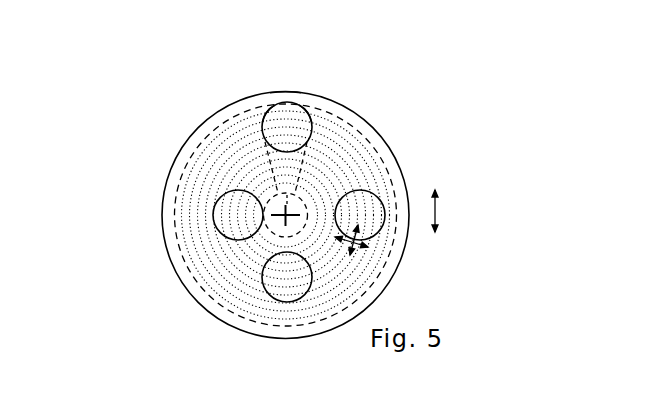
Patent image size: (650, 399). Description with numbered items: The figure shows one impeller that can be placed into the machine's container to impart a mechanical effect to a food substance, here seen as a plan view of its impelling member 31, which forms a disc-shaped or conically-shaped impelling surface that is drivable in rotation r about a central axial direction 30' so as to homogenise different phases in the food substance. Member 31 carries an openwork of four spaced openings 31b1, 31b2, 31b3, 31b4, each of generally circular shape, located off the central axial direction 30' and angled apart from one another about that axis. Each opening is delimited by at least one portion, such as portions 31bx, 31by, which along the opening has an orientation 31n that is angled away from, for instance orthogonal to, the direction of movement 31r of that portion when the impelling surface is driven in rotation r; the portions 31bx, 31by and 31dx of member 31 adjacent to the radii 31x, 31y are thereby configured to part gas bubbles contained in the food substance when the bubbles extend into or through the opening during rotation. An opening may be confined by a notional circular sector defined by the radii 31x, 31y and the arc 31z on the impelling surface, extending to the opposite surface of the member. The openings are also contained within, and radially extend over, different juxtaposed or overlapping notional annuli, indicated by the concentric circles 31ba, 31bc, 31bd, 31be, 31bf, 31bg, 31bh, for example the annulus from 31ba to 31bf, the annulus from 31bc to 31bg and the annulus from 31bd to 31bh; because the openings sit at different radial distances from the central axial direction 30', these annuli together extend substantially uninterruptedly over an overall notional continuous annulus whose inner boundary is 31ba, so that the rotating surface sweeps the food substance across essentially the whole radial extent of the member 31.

The impelling member 31 is at (177, 167).
The portion of the impelling member 31dx is at (175, 202).
The notional annulus boundary 31bc is at (258, 188).
The notional annulus boundary 31bd is at (323, 253).
The notional annulus boundary 31be is at (325, 268).
The notional annulus boundary 31bf is at (316, 285).
The notional annulus boundary 31bg is at (202, 243).
The notional annulus boundary 31bh is at (187, 228).
The notional annulus boundary 31ba is at (308, 203).
The central axial direction 30' is at (231, 277).
The opening 31b1 is at (272, 105).
The opening 31b2 is at (363, 192).
The opening 31b3 is at (272, 297).
The opening 31b4 is at (213, 215).
The radius of notional circular sector 31x is at (262, 120).
The radius of notional circular sector 31y is at (317, 102).
The portion delimiting opening 31bx is at (259, 124).
The portion delimiting opening 31by is at (312, 122).
The arc of notional circular sector 31z is at (295, 91).
The orientation 31n is at (368, 247).
The direction of movement 31r is at (350, 255).
The rotation r is at (438, 212).